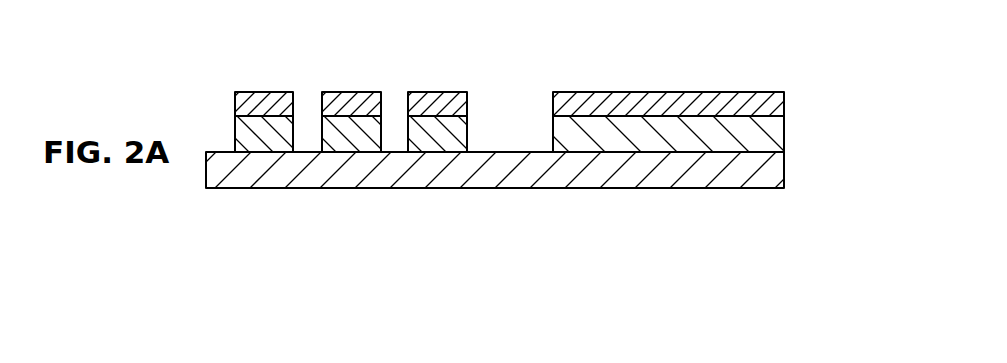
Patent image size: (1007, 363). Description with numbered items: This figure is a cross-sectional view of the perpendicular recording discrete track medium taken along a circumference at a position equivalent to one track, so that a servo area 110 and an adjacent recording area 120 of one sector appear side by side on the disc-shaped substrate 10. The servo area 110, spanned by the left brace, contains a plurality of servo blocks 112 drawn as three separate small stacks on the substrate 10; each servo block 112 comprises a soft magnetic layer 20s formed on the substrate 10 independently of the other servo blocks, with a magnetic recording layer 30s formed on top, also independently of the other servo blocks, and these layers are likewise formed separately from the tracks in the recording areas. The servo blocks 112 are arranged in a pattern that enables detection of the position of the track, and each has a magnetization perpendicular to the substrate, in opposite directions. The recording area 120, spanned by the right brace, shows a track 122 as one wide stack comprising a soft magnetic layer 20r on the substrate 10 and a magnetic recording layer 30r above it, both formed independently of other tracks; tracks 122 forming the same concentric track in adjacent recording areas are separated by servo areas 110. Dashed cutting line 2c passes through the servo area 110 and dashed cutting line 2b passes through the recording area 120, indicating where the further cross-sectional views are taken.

The substrate 10 is at (780, 170).
The soft magnetic layer 20s is at (347, 133).
The magnetic recording layer 30s is at (435, 107).
The soft magnetic layer 20r is at (784, 130).
The magnetic recording layer 30r is at (784, 94).
The servo block 112 is at (357, 129).
The track 122 is at (709, 86).
The servo area 110 is at (528, 238).
The recording area 120 is at (528, 238).
The cutting line 2b- 2b is at (574, 205).
The cutting line 2c- 2c is at (245, 208).